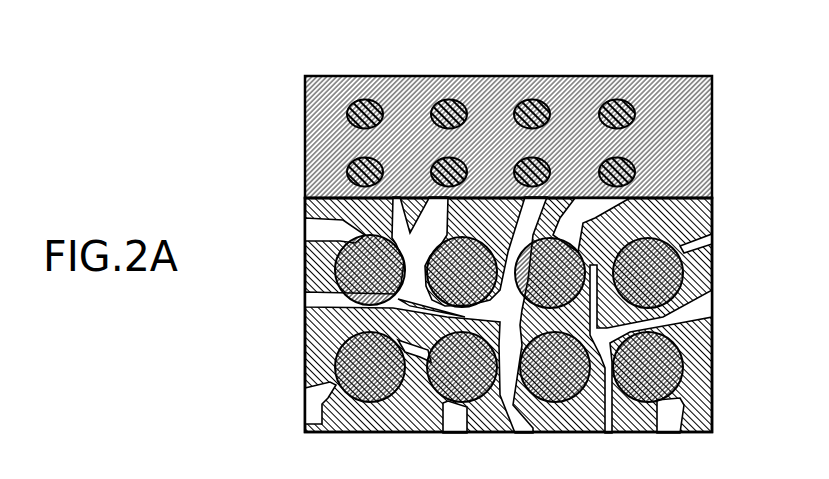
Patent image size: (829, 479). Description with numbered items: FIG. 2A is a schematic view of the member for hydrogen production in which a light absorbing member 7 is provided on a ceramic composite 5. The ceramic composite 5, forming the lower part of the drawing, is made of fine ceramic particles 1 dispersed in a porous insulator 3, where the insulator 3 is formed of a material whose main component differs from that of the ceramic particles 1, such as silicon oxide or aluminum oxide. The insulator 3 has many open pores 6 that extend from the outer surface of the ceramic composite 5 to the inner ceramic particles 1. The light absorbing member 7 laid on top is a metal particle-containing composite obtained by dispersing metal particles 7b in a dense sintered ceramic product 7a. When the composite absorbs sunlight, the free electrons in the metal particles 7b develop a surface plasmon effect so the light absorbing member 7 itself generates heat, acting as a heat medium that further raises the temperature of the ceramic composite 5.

The ceramic particles 1 is at (325, 271).
The insulator 3 is at (307, 344).
The ceramic composite 5 is at (513, 315).
The open pores 6 is at (312, 232).
The light absorbing member 7 is at (551, 114).
The sintered ceramic product 7a is at (660, 88).
The metal particles 7b is at (535, 100).